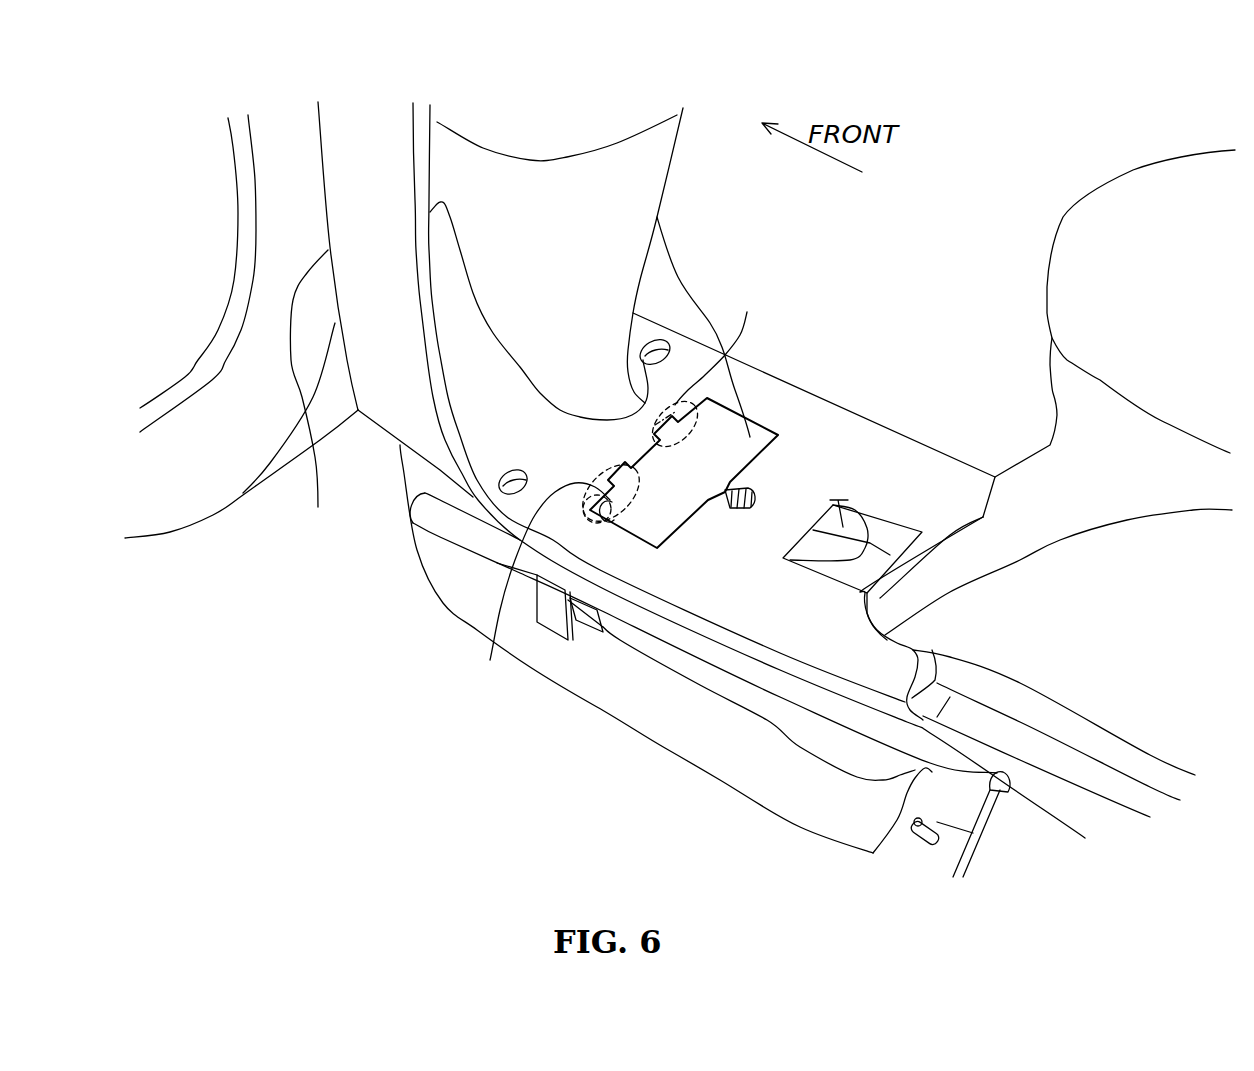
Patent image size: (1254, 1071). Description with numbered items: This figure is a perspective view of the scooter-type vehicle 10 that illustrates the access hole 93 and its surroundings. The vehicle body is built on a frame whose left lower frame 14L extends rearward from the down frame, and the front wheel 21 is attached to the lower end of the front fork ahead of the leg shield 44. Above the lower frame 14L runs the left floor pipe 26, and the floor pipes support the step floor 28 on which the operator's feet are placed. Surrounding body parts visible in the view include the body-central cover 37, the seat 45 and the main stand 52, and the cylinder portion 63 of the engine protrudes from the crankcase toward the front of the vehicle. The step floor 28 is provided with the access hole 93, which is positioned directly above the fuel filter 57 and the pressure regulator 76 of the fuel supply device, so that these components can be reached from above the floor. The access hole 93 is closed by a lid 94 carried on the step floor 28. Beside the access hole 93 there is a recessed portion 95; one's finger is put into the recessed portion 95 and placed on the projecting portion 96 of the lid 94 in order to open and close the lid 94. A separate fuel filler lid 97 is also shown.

The scooter-type vehicle 10 is at (988, 146).
The lower frame 14L is at (595, 717).
The front wheel 21 is at (170, 537).
The floor pipe 26 is at (463, 550).
The step floor 28 is at (808, 650).
The body-central cover 37 is at (1038, 390).
The leg shield 44 is at (289, 395).
The seat 45 is at (1137, 170).
The main stand 52 is at (977, 857).
The fuel filter 57 is at (490, 660).
The cylinder portion 63 is at (667, 748).
The pressure regulator 76 is at (747, 312).
The access hole 93 is at (738, 420).
The lid 94 is at (757, 433).
The recessed portion 95 is at (840, 500).
The projecting portion 96 is at (825, 500).
The fuel filler lid 97 is at (900, 527).